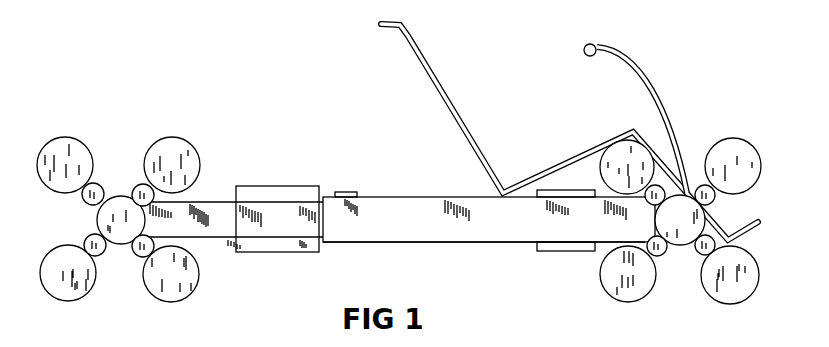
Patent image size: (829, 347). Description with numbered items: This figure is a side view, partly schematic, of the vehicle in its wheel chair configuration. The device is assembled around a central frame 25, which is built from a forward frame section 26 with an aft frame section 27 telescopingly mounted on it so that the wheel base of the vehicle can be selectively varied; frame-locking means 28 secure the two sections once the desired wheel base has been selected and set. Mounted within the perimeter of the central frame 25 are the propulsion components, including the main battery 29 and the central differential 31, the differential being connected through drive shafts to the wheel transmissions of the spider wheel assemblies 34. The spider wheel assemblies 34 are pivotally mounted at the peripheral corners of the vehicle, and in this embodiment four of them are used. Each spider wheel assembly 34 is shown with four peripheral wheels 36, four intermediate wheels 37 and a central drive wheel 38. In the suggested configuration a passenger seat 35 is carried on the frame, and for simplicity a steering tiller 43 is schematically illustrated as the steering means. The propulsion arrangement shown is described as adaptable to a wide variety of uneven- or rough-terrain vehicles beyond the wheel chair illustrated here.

The central frame 25 is at (403, 197).
The forward frame section 26 is at (507, 243).
The aft frame section 27 is at (222, 238).
The frame-locking means 28 is at (352, 191).
The main battery 29 is at (277, 186).
The central differential 31 is at (582, 252).
The spider wheel assemblies 34 is at (377, 221).
The passenger seat 35 is at (444, 82).
The peripheral wheels 36 is at (399, 220).
The intermediate wheels 37 is at (97, 220).
The central drive wheel 38 is at (401, 220).
The steering tiller 43 is at (656, 82).